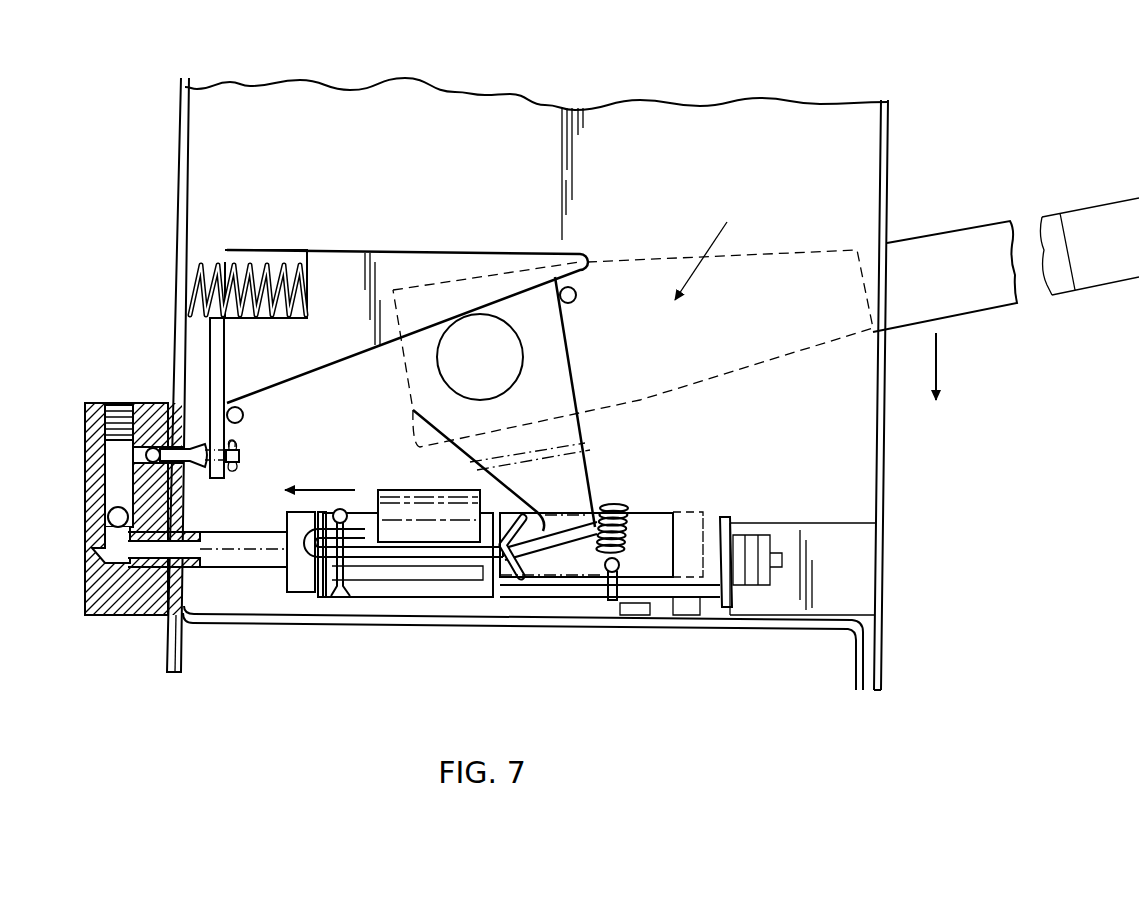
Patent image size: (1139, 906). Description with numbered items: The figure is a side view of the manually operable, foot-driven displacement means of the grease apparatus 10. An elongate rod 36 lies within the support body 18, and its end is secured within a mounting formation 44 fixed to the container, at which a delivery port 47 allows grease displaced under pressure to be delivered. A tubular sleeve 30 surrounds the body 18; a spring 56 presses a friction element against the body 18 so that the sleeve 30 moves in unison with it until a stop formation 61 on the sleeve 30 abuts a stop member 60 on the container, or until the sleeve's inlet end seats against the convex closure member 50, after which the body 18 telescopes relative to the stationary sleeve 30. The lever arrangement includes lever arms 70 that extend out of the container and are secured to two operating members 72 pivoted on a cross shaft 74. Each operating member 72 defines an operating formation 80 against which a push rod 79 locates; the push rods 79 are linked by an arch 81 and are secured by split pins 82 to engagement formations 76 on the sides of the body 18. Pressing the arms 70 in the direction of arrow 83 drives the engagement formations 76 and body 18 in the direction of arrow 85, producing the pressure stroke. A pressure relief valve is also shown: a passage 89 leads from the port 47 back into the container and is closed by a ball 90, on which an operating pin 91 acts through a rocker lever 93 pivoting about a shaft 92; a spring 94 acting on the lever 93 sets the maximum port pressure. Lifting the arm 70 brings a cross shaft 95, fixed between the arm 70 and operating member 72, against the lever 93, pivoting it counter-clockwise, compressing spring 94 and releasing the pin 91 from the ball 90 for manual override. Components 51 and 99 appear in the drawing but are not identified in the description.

The apparatus 10 is at (897, 490).
The support body 18 is at (413, 592).
The tubular sleeve 30 is at (588, 588).
The elongate rod 36 is at (262, 560).
The mounting formation 44 is at (143, 612).
The delivery port 47 is at (108, 402).
The closure member 50 is at (724, 604).
The pin 51 is at (612, 600).
The spring 56 is at (623, 506).
The stop member 60 is at (646, 607).
The stop formation 61 is at (697, 607).
The lever arm 70 is at (1087, 170).
The operating member 72 is at (572, 478).
The cross shaft 74 is at (466, 367).
The engagement formation 76 is at (318, 572).
The push rod 79 is at (480, 552).
The operating formation 80 is at (556, 546).
The arch 81 is at (405, 490).
The split pin 82 is at (341, 594).
The arrow 83 is at (937, 362).
The arrow 85 is at (318, 488).
The passage 89 is at (133, 456).
The ball 90 is at (155, 447).
The operating pin 91 is at (243, 458).
The shaft 92 is at (243, 415).
The rocker lever 93 is at (425, 265).
The spring 94 is at (215, 262).
The cross shaft 95 is at (576, 297).
The clip 99 is at (238, 446).